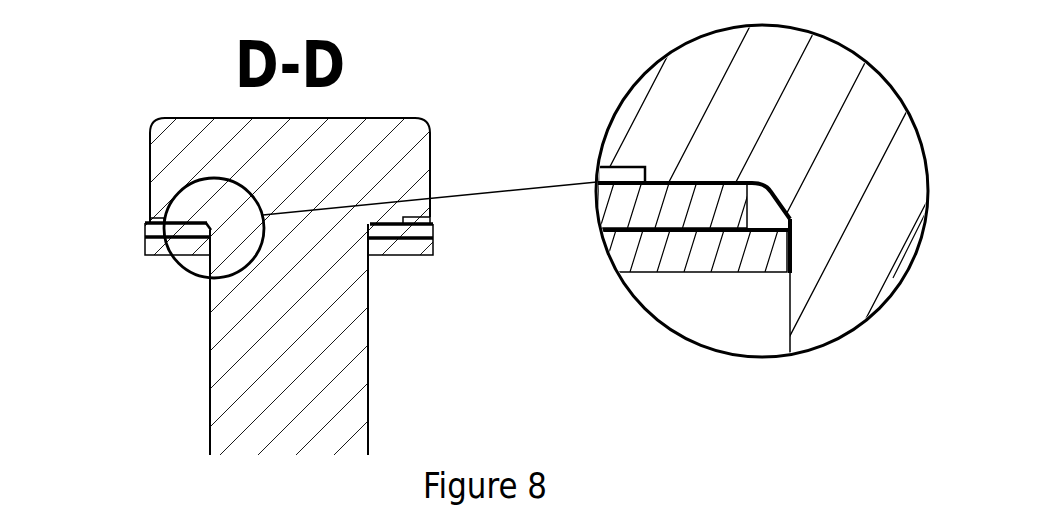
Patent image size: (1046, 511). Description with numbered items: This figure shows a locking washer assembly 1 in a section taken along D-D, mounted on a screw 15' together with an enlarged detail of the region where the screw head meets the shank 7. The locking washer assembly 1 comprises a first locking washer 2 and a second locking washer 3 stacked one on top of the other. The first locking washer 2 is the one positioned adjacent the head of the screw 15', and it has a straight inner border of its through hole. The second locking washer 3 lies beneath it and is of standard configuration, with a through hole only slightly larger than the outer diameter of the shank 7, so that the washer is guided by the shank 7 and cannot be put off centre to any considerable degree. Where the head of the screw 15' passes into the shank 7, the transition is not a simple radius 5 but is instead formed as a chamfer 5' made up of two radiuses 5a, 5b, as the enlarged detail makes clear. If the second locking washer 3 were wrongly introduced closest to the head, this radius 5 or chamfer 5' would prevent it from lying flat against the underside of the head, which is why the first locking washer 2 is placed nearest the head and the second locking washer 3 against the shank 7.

The locking washer assembly 1 is at (116, 221).
The first locking washer 2 is at (150, 230).
The second locking washer 3 is at (190, 245).
The radius 5 is at (155, 187).
The first radius of chamfer 5a is at (750, 187).
The chamfer 5' is at (706, 299).
The second radius of chamfer 5b is at (785, 247).
The shank 7 is at (278, 340).
The screw 15' is at (392, 272).